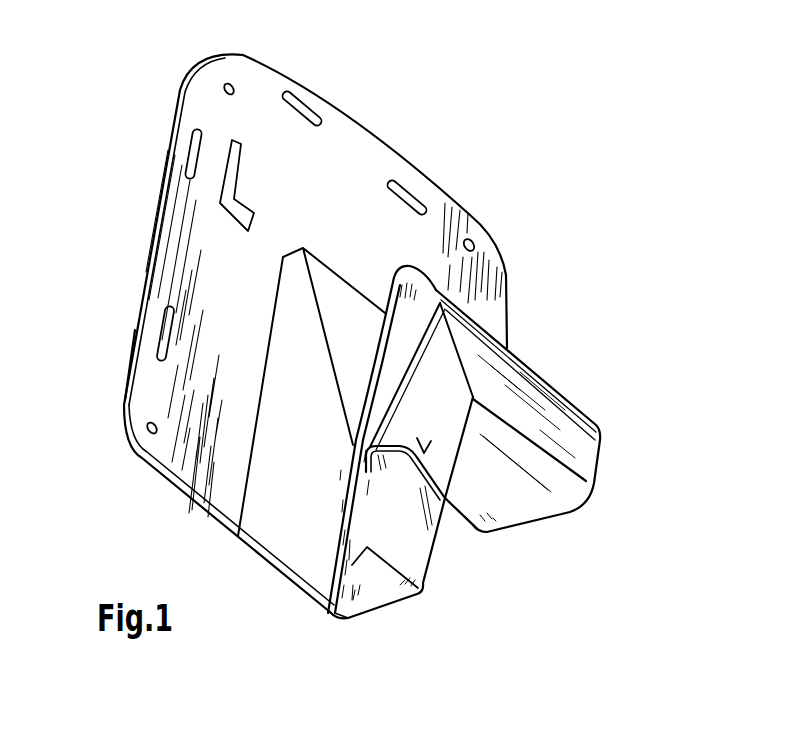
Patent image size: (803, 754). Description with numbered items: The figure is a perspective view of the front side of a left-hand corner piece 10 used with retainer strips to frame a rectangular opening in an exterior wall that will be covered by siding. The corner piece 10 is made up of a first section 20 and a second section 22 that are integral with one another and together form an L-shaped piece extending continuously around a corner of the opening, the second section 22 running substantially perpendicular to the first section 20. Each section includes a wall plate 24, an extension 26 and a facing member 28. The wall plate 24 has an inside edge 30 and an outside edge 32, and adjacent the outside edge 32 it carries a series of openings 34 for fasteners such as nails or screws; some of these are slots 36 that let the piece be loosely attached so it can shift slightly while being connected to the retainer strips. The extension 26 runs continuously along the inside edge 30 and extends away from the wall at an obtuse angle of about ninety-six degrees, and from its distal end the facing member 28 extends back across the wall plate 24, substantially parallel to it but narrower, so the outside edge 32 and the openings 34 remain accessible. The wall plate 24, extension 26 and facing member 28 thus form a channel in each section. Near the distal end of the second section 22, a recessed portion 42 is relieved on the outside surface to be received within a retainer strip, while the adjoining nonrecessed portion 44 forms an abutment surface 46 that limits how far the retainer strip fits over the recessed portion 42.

The left-hand corner piece 10 is at (613, 352).
The first section 20 is at (397, 136).
The second section 22 is at (133, 113).
The wall plate 24 is at (196, 472).
The extension 26 is at (372, 585).
The facing member 28 is at (568, 440).
The inside edge 30 is at (343, 527).
The outside edge 32 is at (128, 379).
The openings 34 is at (225, 93).
The slots 36 is at (292, 100).
The recessed portion 42 is at (466, 565).
The nonrecessed portion 44 is at (463, 464).
The abutment surface 46 is at (415, 462).